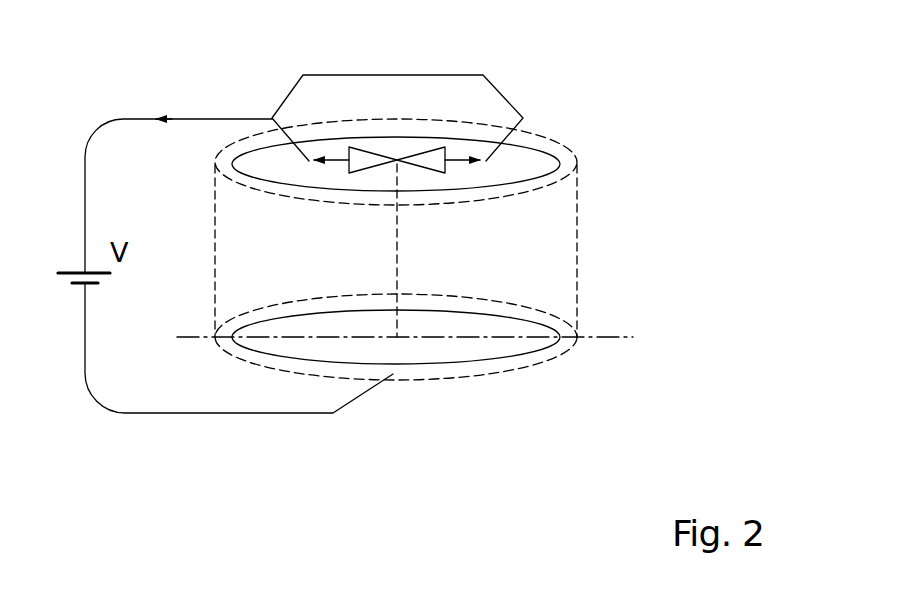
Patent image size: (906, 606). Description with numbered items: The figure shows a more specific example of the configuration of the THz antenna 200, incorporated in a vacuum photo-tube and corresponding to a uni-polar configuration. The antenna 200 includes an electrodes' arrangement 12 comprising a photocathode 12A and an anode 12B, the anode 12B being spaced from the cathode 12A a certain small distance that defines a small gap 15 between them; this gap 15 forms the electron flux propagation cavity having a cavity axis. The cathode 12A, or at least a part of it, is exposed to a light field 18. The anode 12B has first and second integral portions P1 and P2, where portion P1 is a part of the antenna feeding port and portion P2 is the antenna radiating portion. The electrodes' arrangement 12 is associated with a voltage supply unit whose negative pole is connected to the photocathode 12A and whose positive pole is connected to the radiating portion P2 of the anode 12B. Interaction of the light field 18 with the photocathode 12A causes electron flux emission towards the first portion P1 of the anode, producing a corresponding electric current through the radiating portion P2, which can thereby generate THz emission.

The THz antenna 200 is at (558, 118).
The electrodes' arrangement 12 is at (567, 327).
The photocathode 12A is at (280, 348).
The anode 12B is at (262, 163).
The gap 15 is at (283, 253).
The light field 18 is at (507, 348).
The first portion of the anode P1 is at (397, 160).
The antenna radiating portion P2 is at (362, 150).